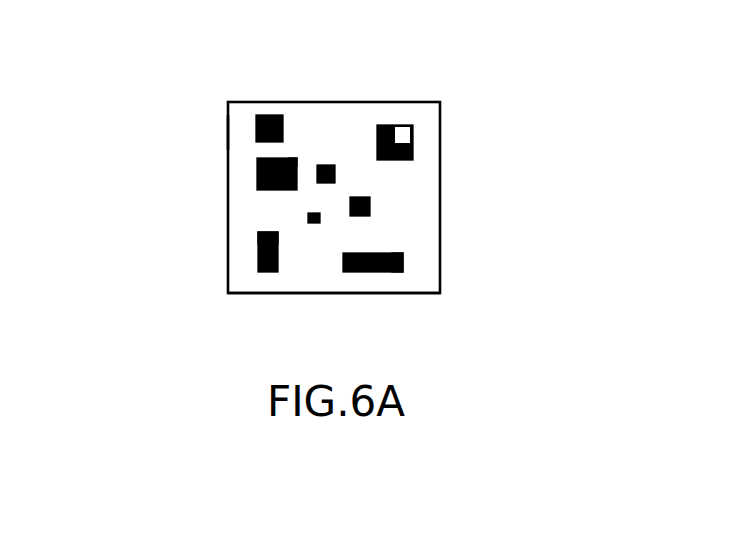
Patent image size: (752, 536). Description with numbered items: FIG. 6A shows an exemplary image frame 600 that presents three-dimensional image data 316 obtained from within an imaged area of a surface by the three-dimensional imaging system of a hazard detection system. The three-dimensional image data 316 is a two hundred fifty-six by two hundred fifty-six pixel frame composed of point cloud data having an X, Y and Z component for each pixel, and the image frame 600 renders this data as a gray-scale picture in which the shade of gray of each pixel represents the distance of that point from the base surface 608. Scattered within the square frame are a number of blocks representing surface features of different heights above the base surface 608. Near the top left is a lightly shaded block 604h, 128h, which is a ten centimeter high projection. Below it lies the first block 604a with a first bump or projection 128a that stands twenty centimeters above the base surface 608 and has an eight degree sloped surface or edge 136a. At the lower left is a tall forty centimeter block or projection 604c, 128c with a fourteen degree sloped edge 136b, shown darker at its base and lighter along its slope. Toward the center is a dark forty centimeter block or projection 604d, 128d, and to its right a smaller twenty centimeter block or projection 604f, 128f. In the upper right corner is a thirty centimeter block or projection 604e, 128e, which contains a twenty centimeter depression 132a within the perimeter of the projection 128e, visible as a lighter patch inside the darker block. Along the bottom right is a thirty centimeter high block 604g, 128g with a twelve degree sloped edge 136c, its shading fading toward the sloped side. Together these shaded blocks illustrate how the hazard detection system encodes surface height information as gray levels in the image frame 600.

The image frame 600 is at (228, 104).
The three-dimensional image data 316 is at (216, 133).
The base surface 608 is at (268, 294).
The block 604h is at (226, 76).
The projection 128h is at (259, 117).
The first block 604a is at (151, 174).
The first bump or projection 128a is at (262, 180).
The block 604d is at (351, 104).
The projection 128d is at (323, 164).
The block 604e is at (453, 113).
The projection 128e is at (383, 125).
The block 604f is at (481, 215).
The projection 128f is at (363, 213).
The block 604g is at (413, 300).
The projection 128g is at (359, 272).
The block 604c is at (149, 264).
The projection 128c is at (271, 272).
The sloped surface or edge 136a is at (291, 165).
The sloped edge 136b is at (258, 233).
The sloped edge 136c is at (390, 258).
The depression 132a is at (400, 126).